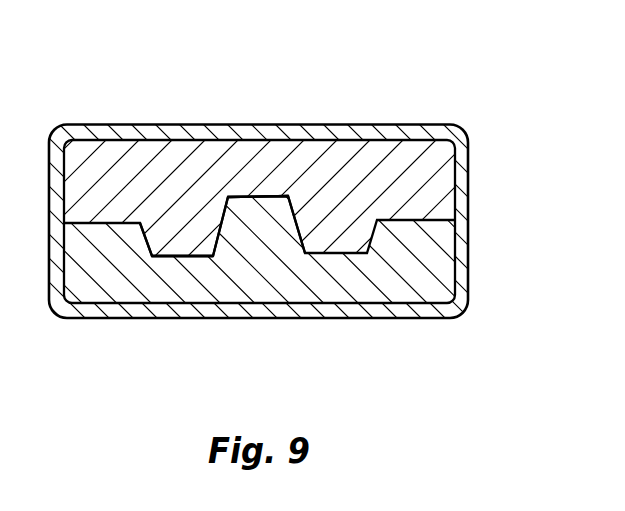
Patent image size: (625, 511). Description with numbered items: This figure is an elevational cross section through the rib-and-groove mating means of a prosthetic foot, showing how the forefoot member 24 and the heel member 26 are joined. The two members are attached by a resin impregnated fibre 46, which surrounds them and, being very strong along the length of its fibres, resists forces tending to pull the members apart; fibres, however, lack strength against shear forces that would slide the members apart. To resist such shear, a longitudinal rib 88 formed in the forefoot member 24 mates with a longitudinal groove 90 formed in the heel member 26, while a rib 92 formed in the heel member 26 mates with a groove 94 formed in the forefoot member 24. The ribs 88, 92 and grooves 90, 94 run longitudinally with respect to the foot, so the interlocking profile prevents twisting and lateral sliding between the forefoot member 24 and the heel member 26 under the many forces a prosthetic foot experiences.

The forefoot member 24 is at (440, 182).
The heel member 26 is at (420, 278).
The resin impregnated fibre 46 is at (395, 125).
The longitudinal rib 88 is at (192, 243).
The longitudinal groove 90 is at (173, 258).
The rib 92 is at (258, 213).
The groove 94 is at (267, 194).